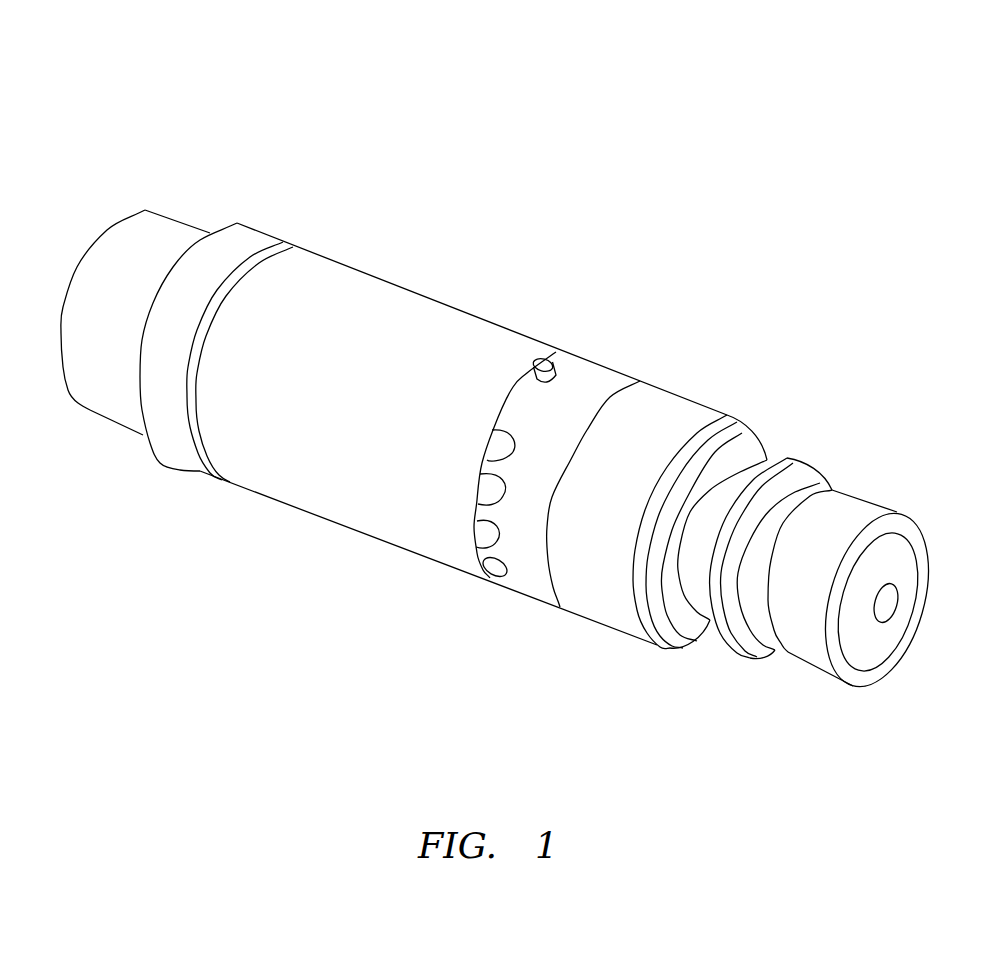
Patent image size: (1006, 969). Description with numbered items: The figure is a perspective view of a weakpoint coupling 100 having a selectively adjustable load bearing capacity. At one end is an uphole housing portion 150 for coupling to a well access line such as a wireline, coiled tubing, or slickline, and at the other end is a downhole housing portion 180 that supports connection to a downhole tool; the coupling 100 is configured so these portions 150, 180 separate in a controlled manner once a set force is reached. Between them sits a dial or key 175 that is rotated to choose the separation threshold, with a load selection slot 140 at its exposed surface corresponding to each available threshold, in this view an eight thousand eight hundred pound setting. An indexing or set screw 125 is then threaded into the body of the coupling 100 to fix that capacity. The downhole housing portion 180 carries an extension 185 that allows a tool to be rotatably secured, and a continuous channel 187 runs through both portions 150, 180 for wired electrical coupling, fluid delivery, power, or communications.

The weakpoint coupling 100 is at (672, 124).
The indexing or set screw 125 is at (545, 362).
The load selection slot 140 is at (493, 445).
The uphole housing portion 150 is at (372, 441).
The dial or key 175 is at (610, 382).
The downhole housing portion 180 is at (615, 541).
The extension 185 is at (802, 648).
The continuous channel 187 is at (887, 604).